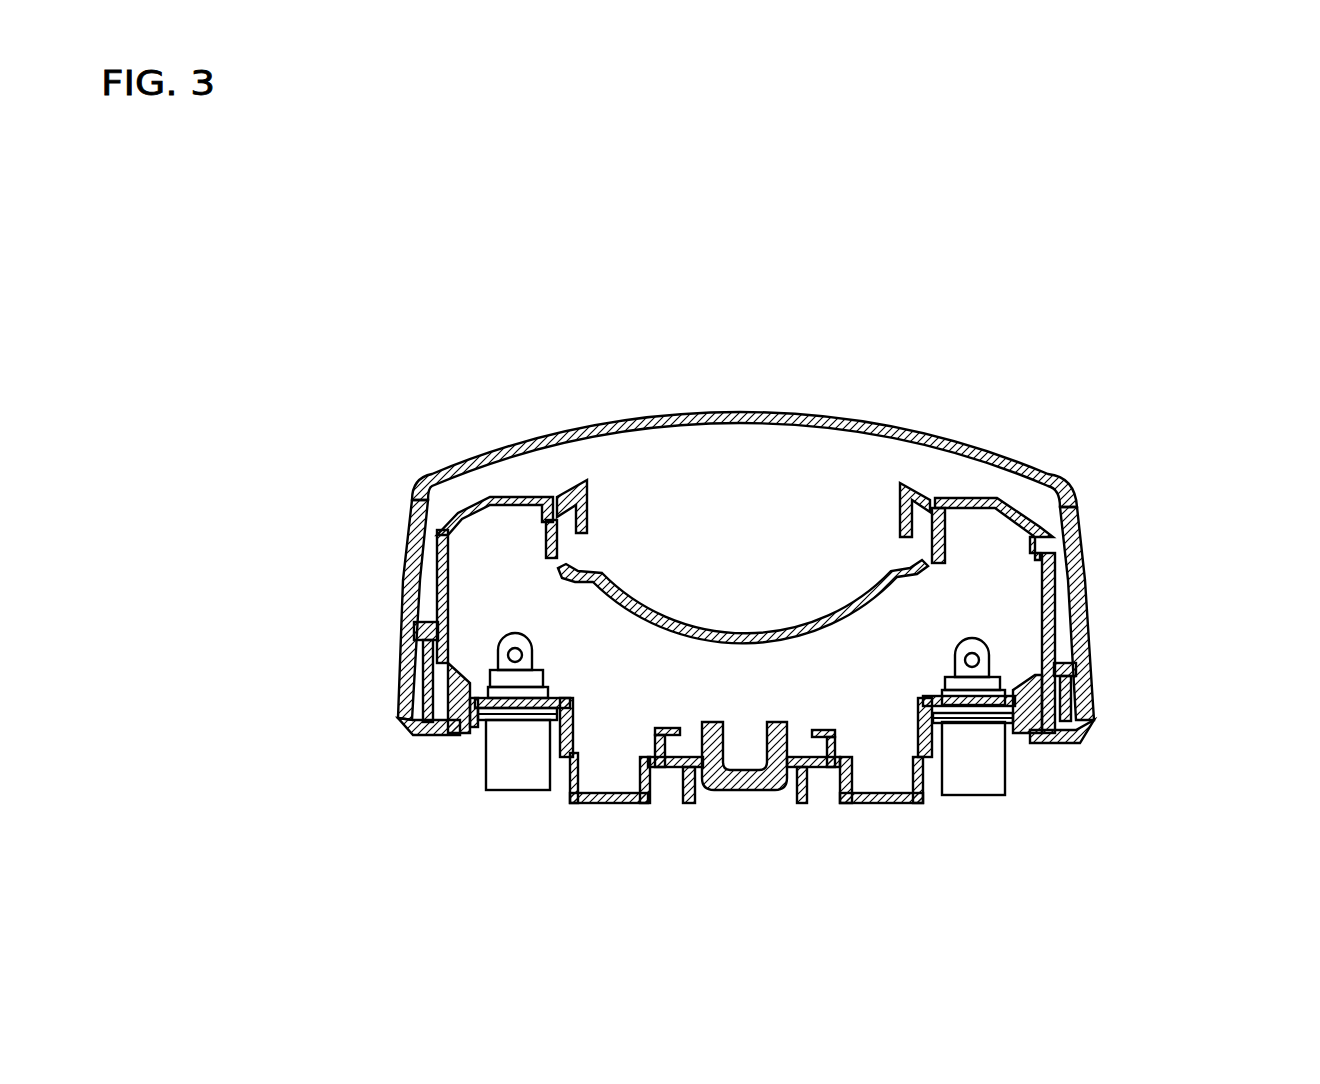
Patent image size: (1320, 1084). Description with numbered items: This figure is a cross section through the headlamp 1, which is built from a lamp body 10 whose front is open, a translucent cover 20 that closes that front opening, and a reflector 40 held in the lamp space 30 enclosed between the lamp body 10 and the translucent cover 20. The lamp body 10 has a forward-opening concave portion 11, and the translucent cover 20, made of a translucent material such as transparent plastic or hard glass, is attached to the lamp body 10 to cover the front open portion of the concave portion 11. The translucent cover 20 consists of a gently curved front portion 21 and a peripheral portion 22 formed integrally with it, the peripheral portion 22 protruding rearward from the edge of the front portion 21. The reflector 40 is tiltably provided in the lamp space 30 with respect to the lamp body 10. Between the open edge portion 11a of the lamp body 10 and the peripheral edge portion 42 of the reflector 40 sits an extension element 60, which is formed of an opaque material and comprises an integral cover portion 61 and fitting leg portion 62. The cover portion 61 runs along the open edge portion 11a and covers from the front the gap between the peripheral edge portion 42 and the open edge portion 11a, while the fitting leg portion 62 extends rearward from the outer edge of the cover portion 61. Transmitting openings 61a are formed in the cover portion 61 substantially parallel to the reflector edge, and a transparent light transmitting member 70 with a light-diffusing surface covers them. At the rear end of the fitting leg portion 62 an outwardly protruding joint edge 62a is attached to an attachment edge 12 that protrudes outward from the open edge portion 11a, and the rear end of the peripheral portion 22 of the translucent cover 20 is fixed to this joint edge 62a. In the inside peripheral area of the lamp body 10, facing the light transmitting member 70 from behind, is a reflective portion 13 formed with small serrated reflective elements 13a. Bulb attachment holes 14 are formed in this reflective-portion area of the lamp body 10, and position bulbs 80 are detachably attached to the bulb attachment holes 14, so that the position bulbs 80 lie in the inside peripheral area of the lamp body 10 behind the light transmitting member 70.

The headlamp 1 is at (1048, 294).
The lamp body 10 is at (1045, 742).
The concave portion 11 is at (600, 796).
The open edge portion 11a is at (1062, 700).
The attachment edge 12 is at (442, 735).
The reflective portion 13 is at (435, 620).
The reflective element 13a is at (1087, 617).
The bulb attachment hole 14 is at (513, 700).
The translucent cover 20 is at (768, 411).
The front portion 21 is at (608, 417).
The peripheral portion 22 is at (400, 590).
The lamp space 30 is at (1018, 540).
The reflector 40 is at (780, 632).
The peripheral edge portion 42 is at (578, 566).
The extension element 60 is at (432, 558).
The cover portion 61 is at (572, 482).
The transmitting opening 61a is at (948, 498).
The fitting leg portion 62 is at (400, 600).
The joint edge 62a is at (437, 637).
The light transmitting member 70 is at (442, 547).
The position bulb 80 is at (516, 633).